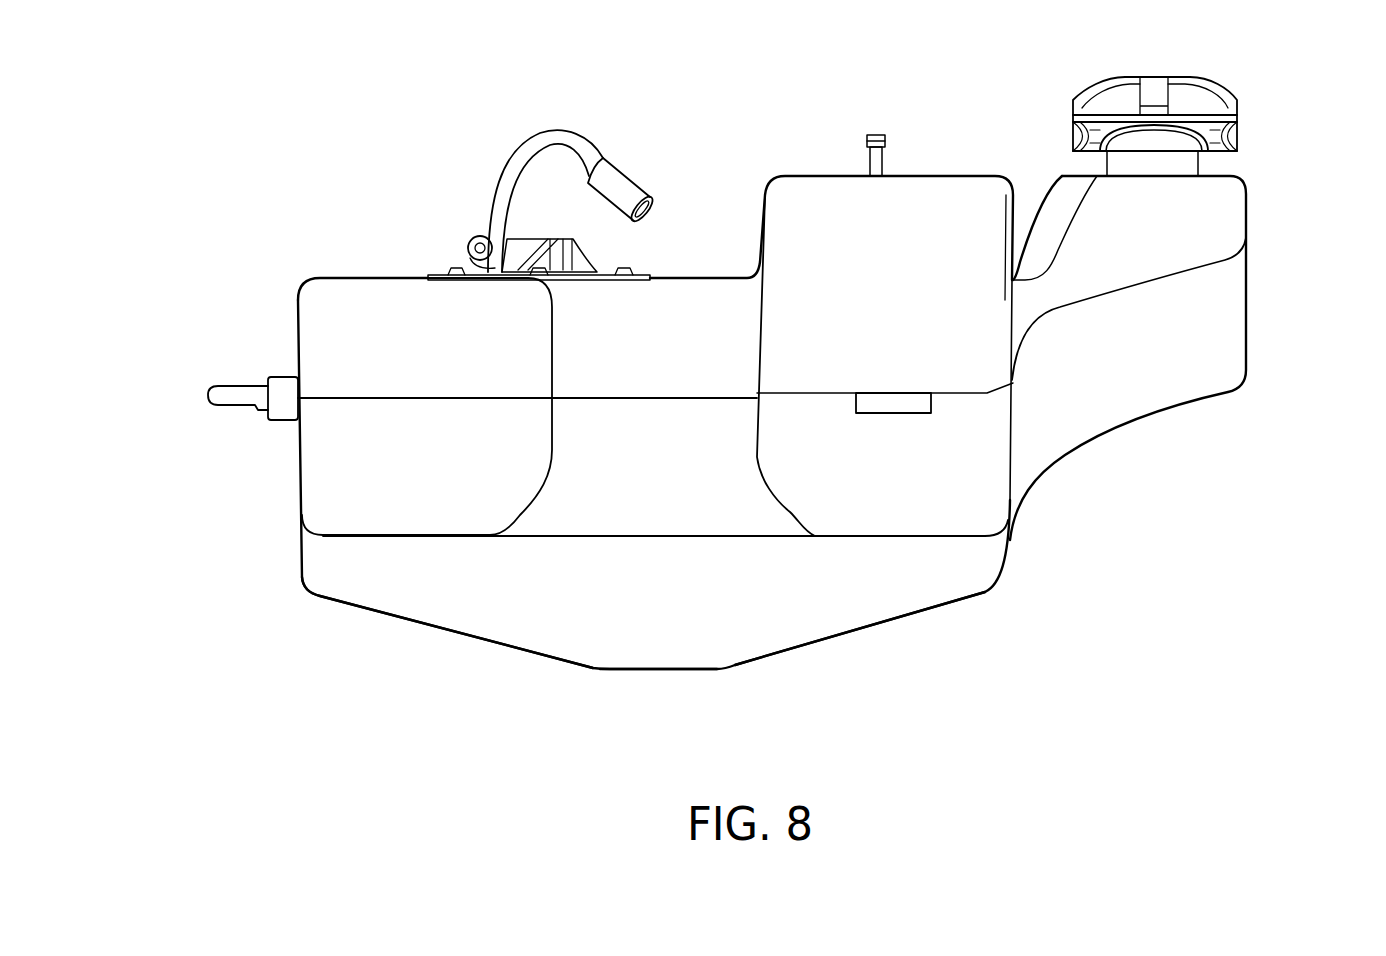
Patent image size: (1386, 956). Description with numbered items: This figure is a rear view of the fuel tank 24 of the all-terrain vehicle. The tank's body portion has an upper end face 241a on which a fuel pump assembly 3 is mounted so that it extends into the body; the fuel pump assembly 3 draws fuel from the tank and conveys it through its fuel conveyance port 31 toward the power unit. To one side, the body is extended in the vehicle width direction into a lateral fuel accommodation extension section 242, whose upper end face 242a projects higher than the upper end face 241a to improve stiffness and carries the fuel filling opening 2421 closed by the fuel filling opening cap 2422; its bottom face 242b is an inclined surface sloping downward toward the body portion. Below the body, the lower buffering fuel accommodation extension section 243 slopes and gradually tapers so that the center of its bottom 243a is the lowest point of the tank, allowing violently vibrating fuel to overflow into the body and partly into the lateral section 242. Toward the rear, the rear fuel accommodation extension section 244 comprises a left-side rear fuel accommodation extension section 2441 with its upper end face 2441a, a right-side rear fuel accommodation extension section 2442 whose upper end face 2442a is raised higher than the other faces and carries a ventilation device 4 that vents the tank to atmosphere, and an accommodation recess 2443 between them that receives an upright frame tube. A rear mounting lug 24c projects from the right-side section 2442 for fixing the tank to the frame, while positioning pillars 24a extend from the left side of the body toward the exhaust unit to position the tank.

The fuel tank 24 is at (1072, 609).
The positioning pillars 24a is at (225, 392).
The rear mounting lug 24c is at (894, 402).
The lateral fuel accommodation extension section 242 is at (1230, 218).
The upper end face of the lateral fuel accommodation extension section 242a is at (1237, 148).
The bottom face of the lateral fuel accommodation extension section 242b is at (1197, 335).
The fuel filling opening 2421 is at (1142, 148).
The fuel filling opening cap 2422 is at (1198, 100).
The lower buffering fuel accommodation extension section 243 is at (448, 630).
The bottom of the lower buffering fuel accommodation extension section 243a is at (658, 653).
The rear fuel accommodation extension section 244 is at (290, 298).
The left-side rear fuel accommodation extension section 2441 is at (332, 467).
The upper end face of the left-side rear fuel accommodation extension section 2441a is at (368, 276).
The right-side rear fuel accommodation extension section 2442 is at (934, 208).
The upper end face of the right-side rear fuel accommodation extension section 2442a is at (826, 176).
The accommodation recess 2443 is at (697, 468).
The upper end face of the body portion 241a is at (702, 278).
The fuel pump assembly 3 is at (540, 238).
The fuel conveyance port 31 is at (476, 245).
The ventilation device 4 is at (876, 133).